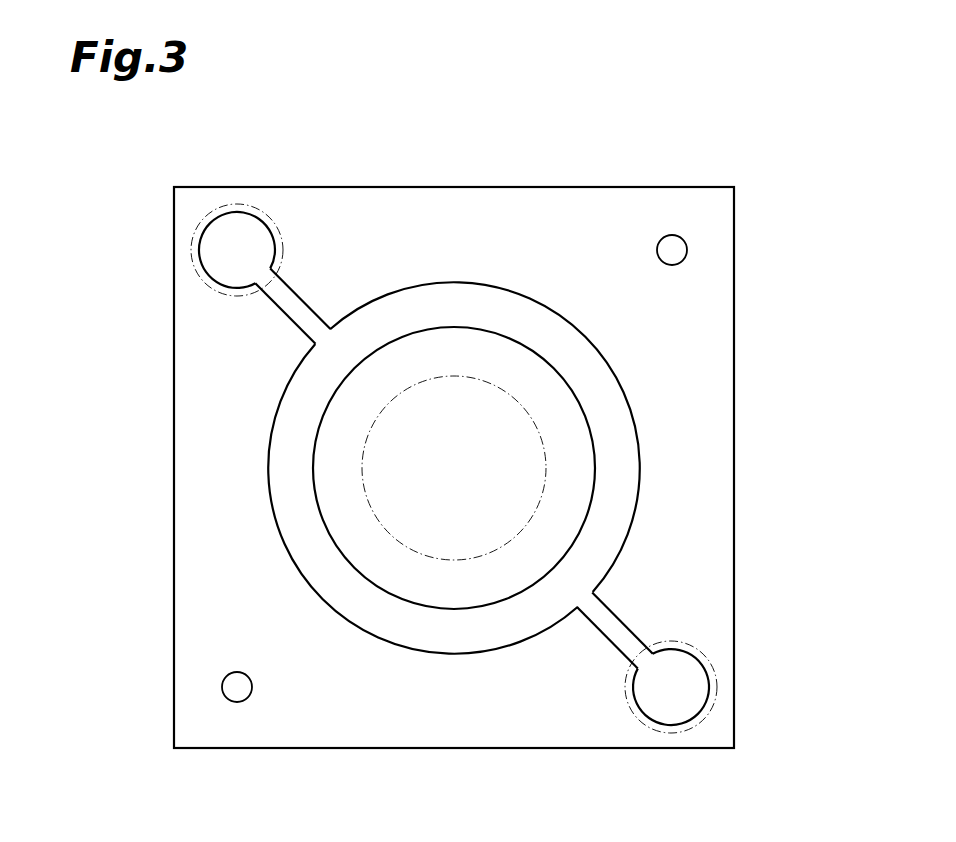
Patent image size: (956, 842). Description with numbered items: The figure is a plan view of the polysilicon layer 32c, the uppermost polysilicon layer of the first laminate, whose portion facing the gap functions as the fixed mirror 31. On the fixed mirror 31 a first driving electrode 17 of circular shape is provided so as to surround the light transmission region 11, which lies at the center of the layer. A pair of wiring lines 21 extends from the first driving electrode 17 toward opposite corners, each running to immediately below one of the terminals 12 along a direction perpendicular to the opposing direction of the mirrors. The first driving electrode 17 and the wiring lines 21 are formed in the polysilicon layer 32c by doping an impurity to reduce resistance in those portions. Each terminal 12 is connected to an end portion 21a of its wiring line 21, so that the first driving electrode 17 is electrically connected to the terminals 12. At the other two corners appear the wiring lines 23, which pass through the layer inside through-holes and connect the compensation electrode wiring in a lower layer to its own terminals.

The light transmission region 11 is at (430, 557).
The terminal 12 is at (257, 205).
The first driving electrode 17 is at (470, 290).
The wiring line 21 is at (275, 303).
The end portion 21a is at (213, 239).
The wiring line 23 is at (673, 247).
The fixed mirror 31 is at (404, 187).
The polysilicon layer 32c is at (445, 735).